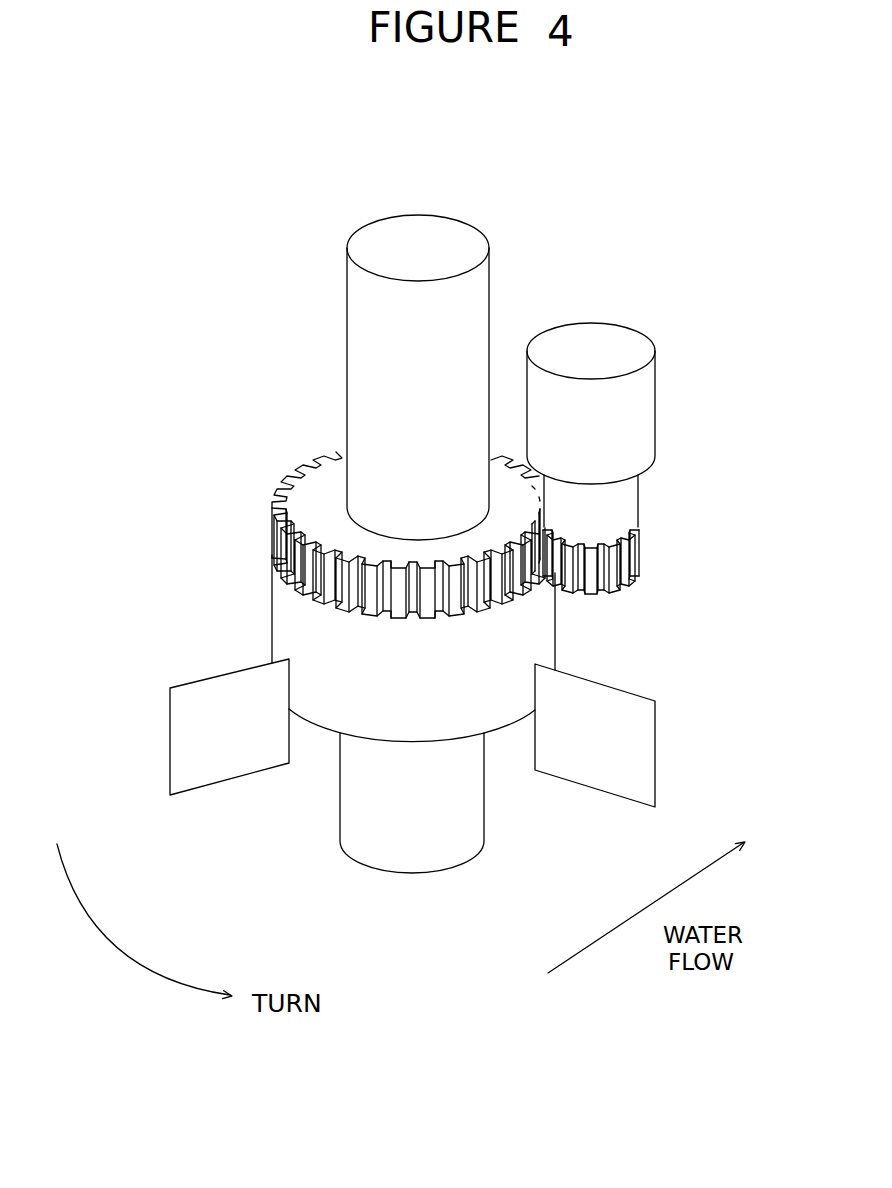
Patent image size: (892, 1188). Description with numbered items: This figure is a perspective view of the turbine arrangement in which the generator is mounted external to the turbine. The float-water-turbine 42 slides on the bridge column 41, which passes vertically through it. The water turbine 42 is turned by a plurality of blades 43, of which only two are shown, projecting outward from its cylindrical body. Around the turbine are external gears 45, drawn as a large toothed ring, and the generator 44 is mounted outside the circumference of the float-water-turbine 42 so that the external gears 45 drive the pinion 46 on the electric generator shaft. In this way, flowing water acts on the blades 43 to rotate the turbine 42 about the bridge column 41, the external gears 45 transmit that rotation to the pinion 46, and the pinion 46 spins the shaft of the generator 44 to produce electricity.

The bridge column 41 is at (455, 220).
The float-water-turbine 42 is at (447, 742).
The blades 43 is at (630, 692).
The generator 44 is at (655, 383).
The external gears 45 is at (273, 533).
The pinion 46 is at (640, 555).